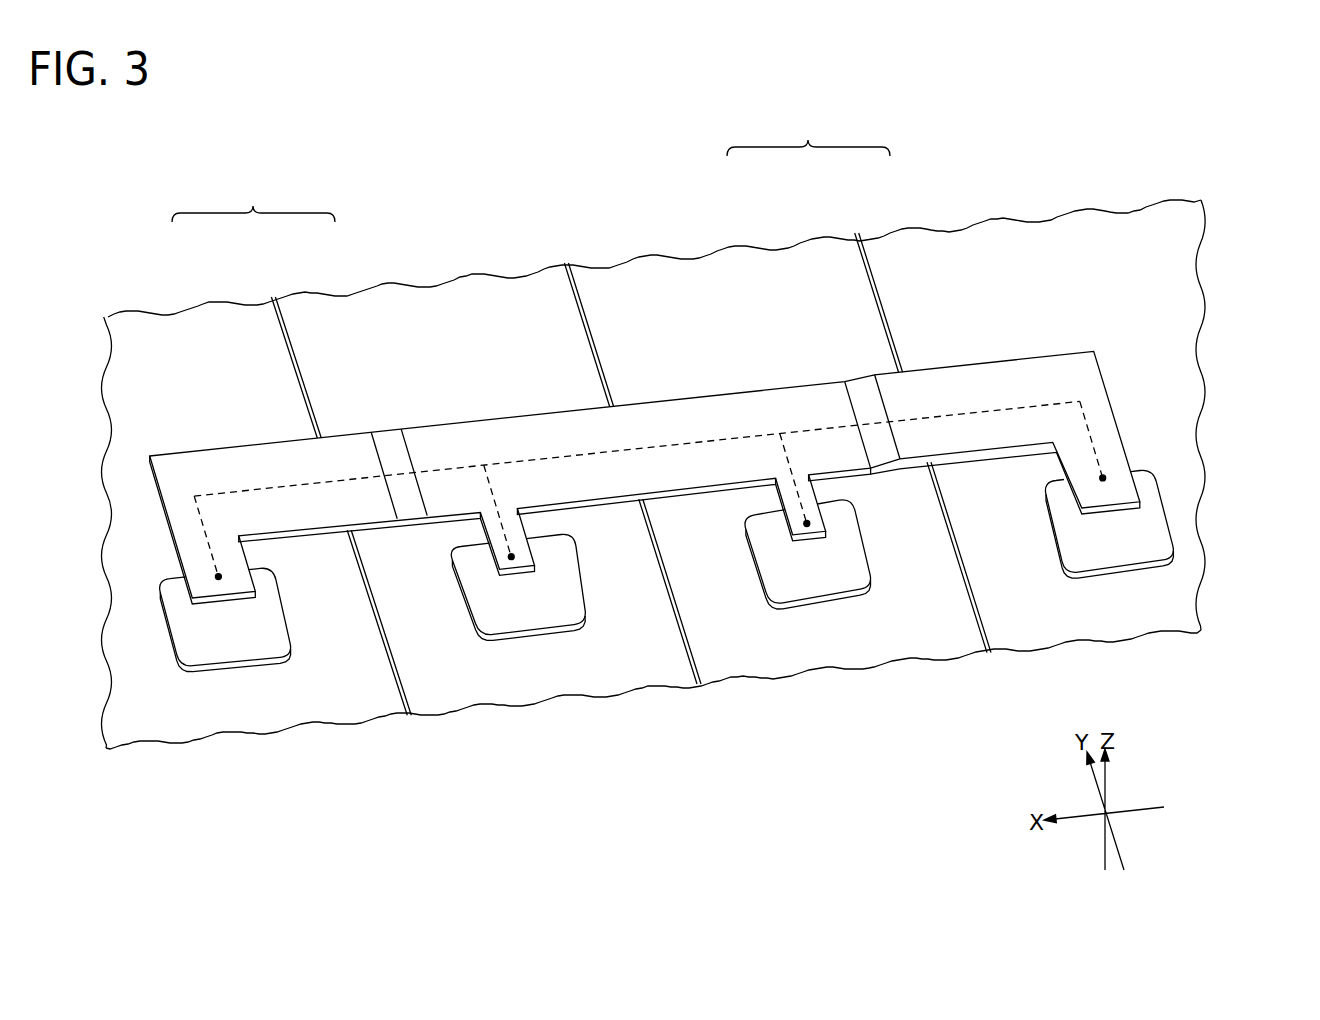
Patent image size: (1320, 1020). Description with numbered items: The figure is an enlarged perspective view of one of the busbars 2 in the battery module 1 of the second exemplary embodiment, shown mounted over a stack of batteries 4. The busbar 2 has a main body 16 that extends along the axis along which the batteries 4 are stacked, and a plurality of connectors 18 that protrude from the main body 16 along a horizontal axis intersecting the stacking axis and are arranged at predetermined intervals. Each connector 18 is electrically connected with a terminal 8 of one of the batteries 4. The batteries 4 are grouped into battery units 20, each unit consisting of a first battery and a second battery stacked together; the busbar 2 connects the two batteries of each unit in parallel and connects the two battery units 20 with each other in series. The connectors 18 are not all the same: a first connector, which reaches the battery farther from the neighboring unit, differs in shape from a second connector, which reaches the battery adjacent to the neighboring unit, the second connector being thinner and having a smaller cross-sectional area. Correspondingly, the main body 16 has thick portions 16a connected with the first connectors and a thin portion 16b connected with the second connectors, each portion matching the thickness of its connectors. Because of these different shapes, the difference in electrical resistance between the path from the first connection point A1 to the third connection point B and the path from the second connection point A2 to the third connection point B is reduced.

The battery module 1 is at (722, 503).
The busbar 2 is at (1098, 349).
The battery 4 is at (218, 334).
The terminal 8 is at (225, 650).
The main body 16 is at (1050, 380).
The thick portion 16a is at (927, 384).
The thin portion 16b is at (813, 400).
The connector 18 is at (226, 588).
The battery unit 20 is at (531, 165).
The first connection point A1 is at (218, 577).
The second connection point A2 is at (511, 557).
The third connection point B is at (483, 465).